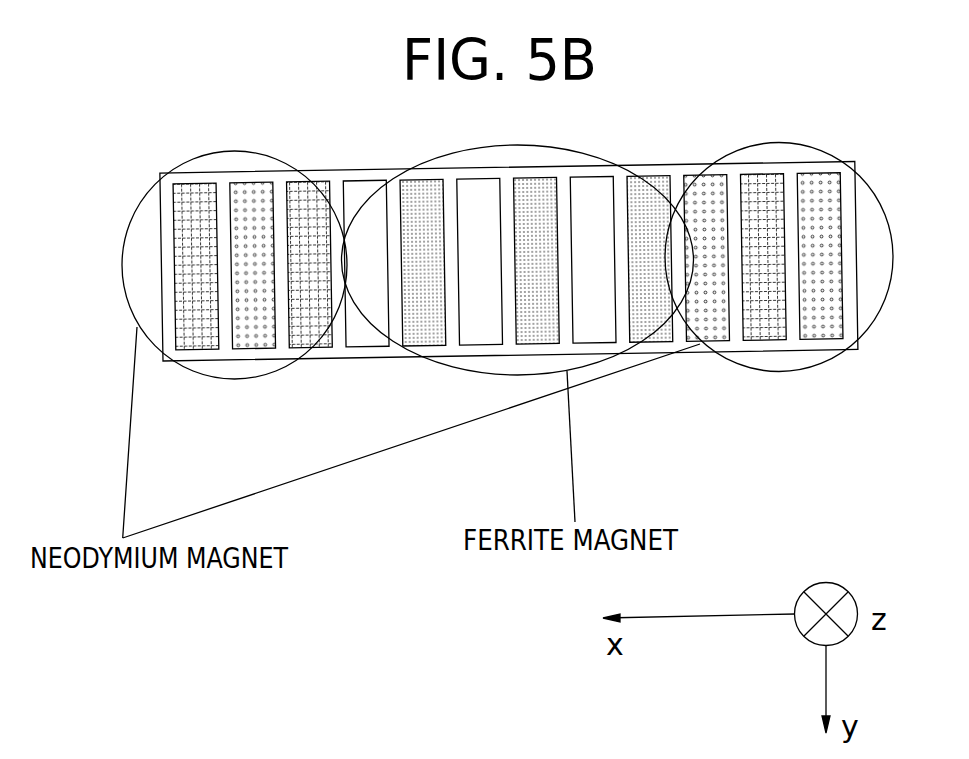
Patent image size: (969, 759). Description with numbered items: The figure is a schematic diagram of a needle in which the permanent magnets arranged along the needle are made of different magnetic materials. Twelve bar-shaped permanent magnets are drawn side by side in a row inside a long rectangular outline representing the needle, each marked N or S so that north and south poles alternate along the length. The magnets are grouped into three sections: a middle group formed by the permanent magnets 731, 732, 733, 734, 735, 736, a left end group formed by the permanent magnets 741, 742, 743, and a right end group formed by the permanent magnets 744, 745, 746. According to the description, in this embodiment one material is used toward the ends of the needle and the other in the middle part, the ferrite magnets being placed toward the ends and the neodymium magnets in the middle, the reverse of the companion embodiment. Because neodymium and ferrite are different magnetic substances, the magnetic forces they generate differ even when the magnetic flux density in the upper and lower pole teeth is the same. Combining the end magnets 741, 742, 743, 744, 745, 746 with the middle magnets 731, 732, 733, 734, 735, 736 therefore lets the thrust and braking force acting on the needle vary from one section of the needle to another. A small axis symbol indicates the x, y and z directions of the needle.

The ferrite magnet (S pole) 731 is at (370, 340).
The ferrite magnet (N pole) 732 is at (430, 339).
The ferrite magnet (S pole) 733 is at (488, 338).
The ferrite magnet (N pole) 734 is at (551, 337).
The ferrite magnet (S pole) 735 is at (606, 336).
The ferrite magnet (N pole) 736 is at (663, 335).
The neodymium magnet (N pole) 741 is at (200, 343).
The neodymium magnet (S pole) 742 is at (258, 342).
The neodymium magnet (N pole) 743 is at (320, 341).
The neodymium magnet (S pole) 744 is at (720, 334).
The neodymium magnet (N pole) 745 is at (778, 333).
The neodymium magnet (S pole) 746 is at (835, 332).